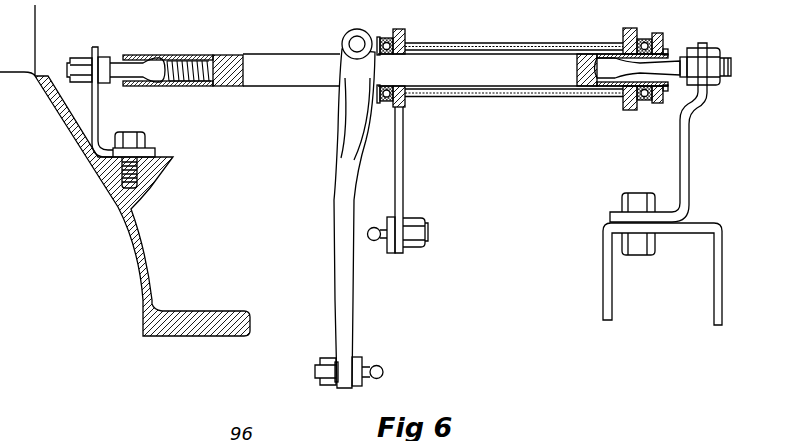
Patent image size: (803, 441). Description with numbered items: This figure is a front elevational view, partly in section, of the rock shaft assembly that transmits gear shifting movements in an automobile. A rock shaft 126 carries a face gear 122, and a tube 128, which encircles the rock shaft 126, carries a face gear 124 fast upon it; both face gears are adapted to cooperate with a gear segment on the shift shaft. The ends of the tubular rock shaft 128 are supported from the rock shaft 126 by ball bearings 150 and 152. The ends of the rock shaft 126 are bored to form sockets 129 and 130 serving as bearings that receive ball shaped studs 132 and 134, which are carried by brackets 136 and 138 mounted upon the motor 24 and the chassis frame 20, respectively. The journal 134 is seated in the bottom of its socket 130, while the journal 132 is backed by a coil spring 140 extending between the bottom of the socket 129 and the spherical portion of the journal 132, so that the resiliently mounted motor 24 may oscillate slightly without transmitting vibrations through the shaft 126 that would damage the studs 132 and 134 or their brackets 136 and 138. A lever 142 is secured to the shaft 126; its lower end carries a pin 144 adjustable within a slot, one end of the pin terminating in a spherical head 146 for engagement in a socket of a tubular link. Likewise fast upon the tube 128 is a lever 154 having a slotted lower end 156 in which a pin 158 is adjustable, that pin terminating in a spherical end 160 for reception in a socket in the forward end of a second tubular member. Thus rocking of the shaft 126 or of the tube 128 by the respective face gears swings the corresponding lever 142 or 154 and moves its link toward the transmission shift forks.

The chassis frame 20 is at (720, 283).
The motor 24 is at (148, 288).
The face gear 122 is at (662, 22).
The face gear 124 is at (627, 27).
The rock shaft 126 is at (288, 65).
The tubular rock shaft 128 is at (535, 31).
The socket 129 is at (220, 56).
The socket 130 is at (670, 54).
The ball shaped stud 132 is at (163, 44).
The ball shaped stud 134 is at (596, 80).
The bracket 136 is at (100, 128).
The bracket 138 is at (685, 164).
The coil spring 140 is at (205, 87).
The lever 142 is at (340, 263).
The pin 144 is at (366, 366).
The spherical head 146 is at (384, 373).
The ball bearing 150 is at (644, 110).
The ball bearing 152 is at (384, 23).
The lever 154 is at (402, 170).
The slotted lower end 156 is at (404, 250).
The pin 158 is at (385, 215).
The spherical end 160 is at (372, 241).